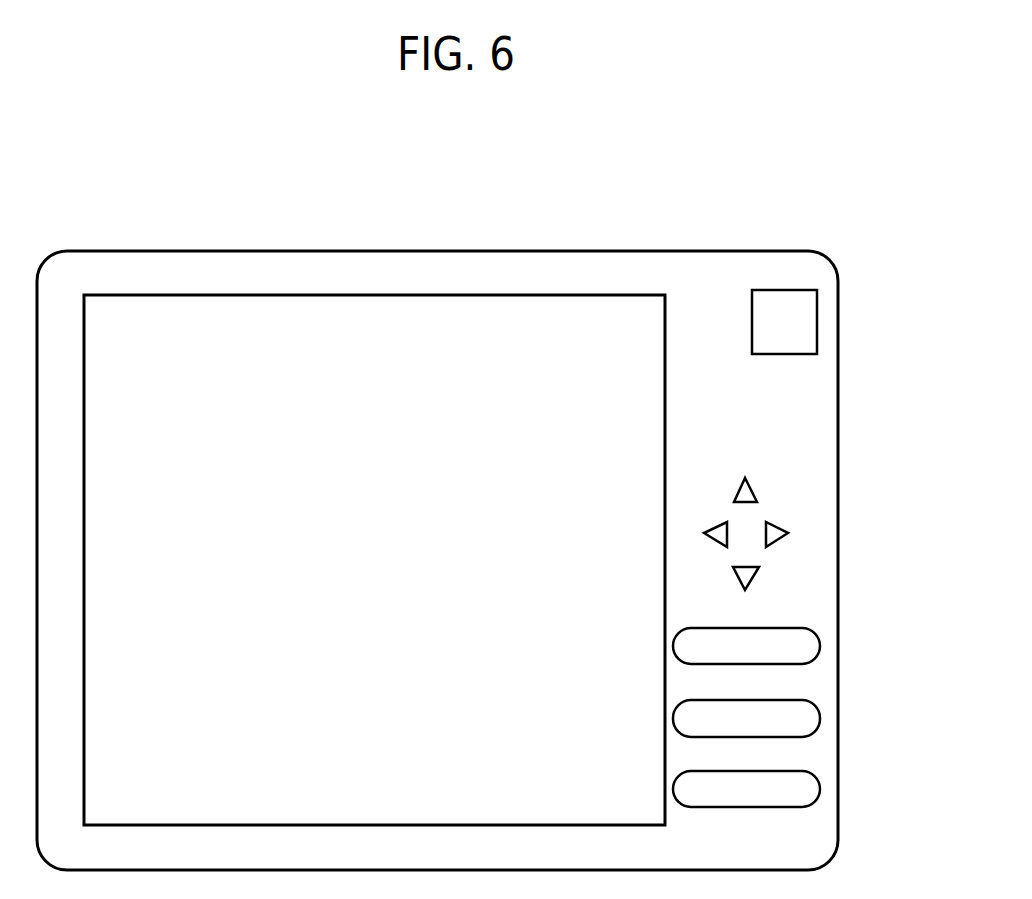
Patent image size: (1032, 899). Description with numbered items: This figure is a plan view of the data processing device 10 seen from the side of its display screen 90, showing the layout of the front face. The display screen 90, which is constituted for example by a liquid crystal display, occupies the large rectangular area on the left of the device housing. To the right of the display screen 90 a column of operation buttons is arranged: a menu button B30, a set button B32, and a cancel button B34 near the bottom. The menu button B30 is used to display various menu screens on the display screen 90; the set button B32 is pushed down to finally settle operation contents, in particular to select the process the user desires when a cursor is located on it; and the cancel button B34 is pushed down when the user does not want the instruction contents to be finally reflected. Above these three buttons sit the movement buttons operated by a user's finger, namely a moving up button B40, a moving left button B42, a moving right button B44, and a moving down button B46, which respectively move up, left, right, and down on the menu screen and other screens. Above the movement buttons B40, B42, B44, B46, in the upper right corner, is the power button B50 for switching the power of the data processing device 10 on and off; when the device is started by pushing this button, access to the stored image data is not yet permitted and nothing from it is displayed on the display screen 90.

The data processing device 10 is at (464, 237).
The display screen 90 is at (395, 597).
The power button B50 is at (817, 318).
The moving up button B40 is at (753, 487).
The moving left button B42 is at (708, 540).
The moving right button B44 is at (780, 528).
The moving down button B46 is at (753, 575).
The menu button B30 is at (820, 646).
The set button B32 is at (820, 718).
The cancel button B34 is at (820, 789).